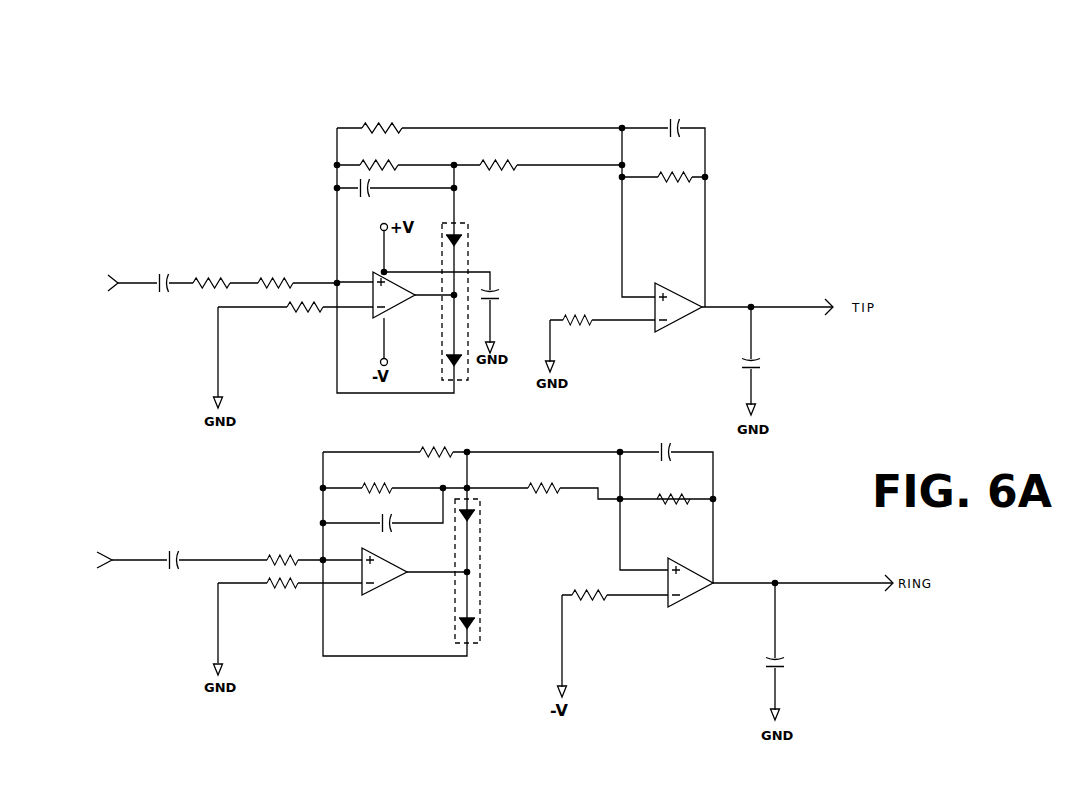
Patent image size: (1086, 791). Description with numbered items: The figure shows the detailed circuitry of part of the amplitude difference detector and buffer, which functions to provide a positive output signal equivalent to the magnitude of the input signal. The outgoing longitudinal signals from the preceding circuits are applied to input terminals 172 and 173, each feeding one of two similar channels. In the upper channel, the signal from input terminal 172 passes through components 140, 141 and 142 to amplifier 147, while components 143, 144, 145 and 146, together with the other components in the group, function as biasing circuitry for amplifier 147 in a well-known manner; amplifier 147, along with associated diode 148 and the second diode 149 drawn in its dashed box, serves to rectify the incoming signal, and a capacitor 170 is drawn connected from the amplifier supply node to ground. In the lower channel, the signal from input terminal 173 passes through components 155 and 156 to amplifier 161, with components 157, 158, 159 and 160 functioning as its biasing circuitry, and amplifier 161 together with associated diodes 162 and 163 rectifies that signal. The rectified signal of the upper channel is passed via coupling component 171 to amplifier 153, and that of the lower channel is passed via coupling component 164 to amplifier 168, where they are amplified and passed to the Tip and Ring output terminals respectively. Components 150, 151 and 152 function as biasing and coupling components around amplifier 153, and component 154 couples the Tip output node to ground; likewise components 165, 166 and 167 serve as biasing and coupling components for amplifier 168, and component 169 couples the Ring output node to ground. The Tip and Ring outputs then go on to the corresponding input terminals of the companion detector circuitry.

The biasing component 140 is at (160, 275).
The biasing component 141 is at (208, 278).
The biasing component 142 is at (272, 278).
The biasing component 143 is at (300, 310).
The biasing component 144 is at (372, 126).
The biasing component 145 is at (372, 163).
The biasing component 146 is at (370, 190).
The amplifier 147 is at (400, 303).
The diode 148 is at (466, 237).
The clamp diode 149 is at (467, 368).
The biasing and coupling component 150 is at (596, 302).
The biasing and coupling component 151 is at (684, 102).
The biasing and coupling component 152 is at (684, 156).
The amplifier 153 is at (690, 288).
The biasing and coupling component 154 is at (779, 363).
The biasing component 155 is at (168, 546).
The biasing component 156 is at (286, 553).
The biasing component 157 is at (278, 587).
The biasing component 158 is at (442, 449).
The biasing component 159 is at (380, 480).
The biasing component 160 is at (380, 517).
The amplifier 161 is at (390, 593).
The diode 162 is at (479, 521).
The diode 163 is at (482, 621).
The coupling component 164 is at (546, 483).
The biasing and coupling component 165 is at (678, 436).
The biasing and coupling component 166 is at (686, 508).
The biasing and coupling component 167 is at (592, 602).
The amplifier 168 is at (693, 595).
The biasing and coupling component 169 is at (788, 666).
The bypass capacitor 170 is at (510, 282).
The coupling component 171 is at (512, 152).
The input terminal 172 is at (108, 278).
The input terminal 173 is at (98, 559).